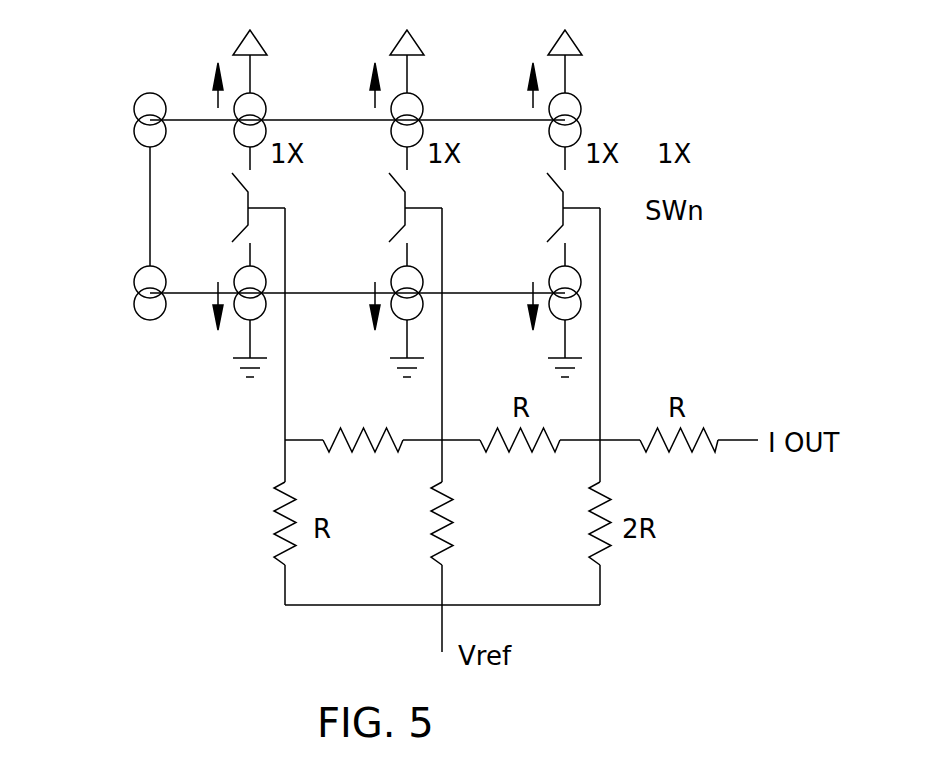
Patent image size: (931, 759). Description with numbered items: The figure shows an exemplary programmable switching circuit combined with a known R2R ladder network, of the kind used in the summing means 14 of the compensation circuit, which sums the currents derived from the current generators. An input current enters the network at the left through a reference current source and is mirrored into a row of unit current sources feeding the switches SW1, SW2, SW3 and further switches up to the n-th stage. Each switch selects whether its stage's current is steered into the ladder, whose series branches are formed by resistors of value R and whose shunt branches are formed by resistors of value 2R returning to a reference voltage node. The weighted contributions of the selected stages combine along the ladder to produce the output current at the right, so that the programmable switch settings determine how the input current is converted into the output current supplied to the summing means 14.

The summing means 14 is at (122, 293).
The switch 1 SW1 is at (230, 207).
The switch 2 SW2 is at (386, 207).
The switch 3 SW3 is at (544, 207).
The resistor R is at (363, 422).
The resistor 2R is at (464, 523).